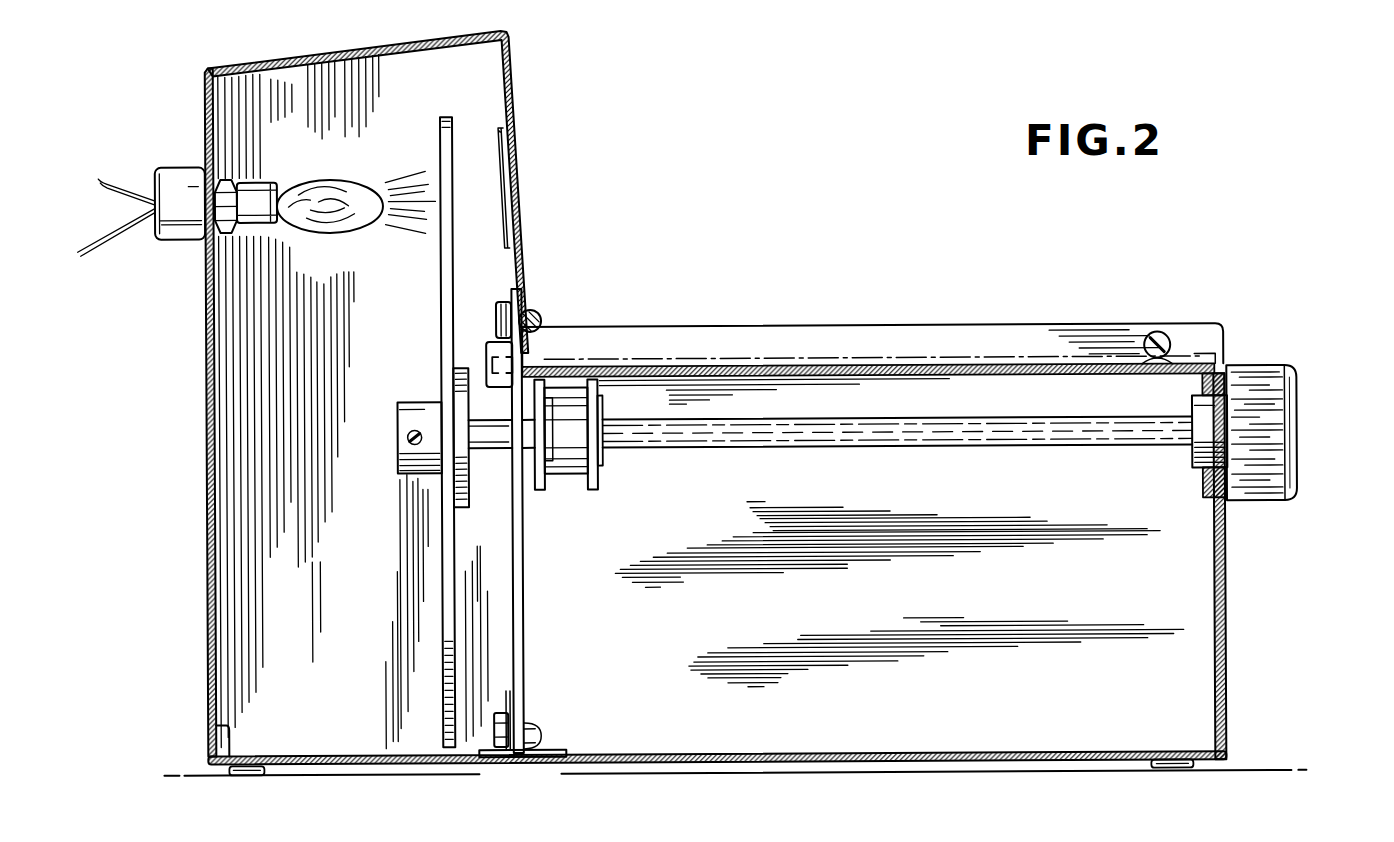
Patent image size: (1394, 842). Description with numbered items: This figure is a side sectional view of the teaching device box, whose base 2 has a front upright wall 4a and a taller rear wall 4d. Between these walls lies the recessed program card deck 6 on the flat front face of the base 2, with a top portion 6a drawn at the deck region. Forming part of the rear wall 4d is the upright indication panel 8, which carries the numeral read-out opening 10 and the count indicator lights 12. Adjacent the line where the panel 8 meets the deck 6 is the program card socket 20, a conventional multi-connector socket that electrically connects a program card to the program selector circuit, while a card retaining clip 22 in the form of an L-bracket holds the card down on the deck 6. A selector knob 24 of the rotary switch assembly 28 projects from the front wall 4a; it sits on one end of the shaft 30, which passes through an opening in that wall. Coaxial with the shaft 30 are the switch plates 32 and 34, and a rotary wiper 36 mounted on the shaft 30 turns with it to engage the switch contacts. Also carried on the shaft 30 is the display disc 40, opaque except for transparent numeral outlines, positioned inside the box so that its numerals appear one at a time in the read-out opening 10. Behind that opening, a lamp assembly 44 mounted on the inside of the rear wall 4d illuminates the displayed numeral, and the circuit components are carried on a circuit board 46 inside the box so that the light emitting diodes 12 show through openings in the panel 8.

The base 2 is at (1258, 716).
The front upright wall 4a is at (1226, 633).
The rear wall 4d is at (207, 596).
The recessed program card deck 6 is at (853, 362).
The top cover plate 6a is at (1036, 326).
The upright indication panel 8 is at (510, 77).
The numeral read-out opening 10 is at (535, 177).
The count indicator lights 12 is at (535, 311).
The program card socket 20 is at (540, 354).
The card retaining clips 22 is at (1172, 340).
The selector knob 24 is at (1268, 502).
The rotary switch assembly 28 is at (1312, 399).
The shaft 30 is at (958, 446).
The switch plate 32 is at (594, 488).
The switch plate 34 is at (539, 489).
The rotary wiper 36 is at (602, 406).
The display disc 40 is at (441, 131).
The lamp assembly 44 is at (258, 200).
The circuit board 46 is at (521, 597).